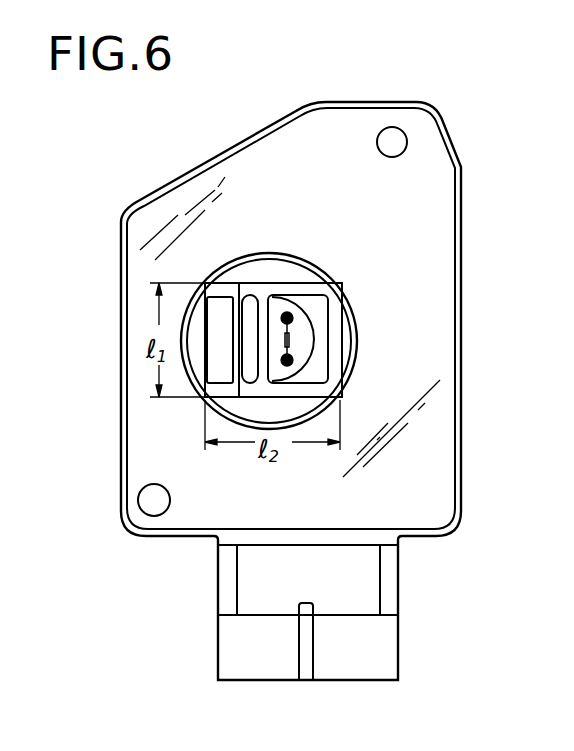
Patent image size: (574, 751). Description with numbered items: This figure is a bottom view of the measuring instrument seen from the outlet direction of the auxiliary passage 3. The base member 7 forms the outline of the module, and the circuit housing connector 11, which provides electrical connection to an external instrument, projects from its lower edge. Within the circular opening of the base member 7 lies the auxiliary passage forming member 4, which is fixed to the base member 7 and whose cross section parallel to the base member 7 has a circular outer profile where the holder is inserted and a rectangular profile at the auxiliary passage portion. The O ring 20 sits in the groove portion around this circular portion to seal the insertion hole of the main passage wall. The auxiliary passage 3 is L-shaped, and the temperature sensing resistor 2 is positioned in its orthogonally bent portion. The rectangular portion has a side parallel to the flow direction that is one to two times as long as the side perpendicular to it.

The temperature sensing resistor 2 is at (287, 340).
The auxiliary passage 3 is at (317, 304).
The auxiliary passage forming member 4 is at (257, 295).
The base member 7 is at (433, 440).
The circuit housing connector 11 is at (398, 645).
The O ring 20 is at (303, 258).